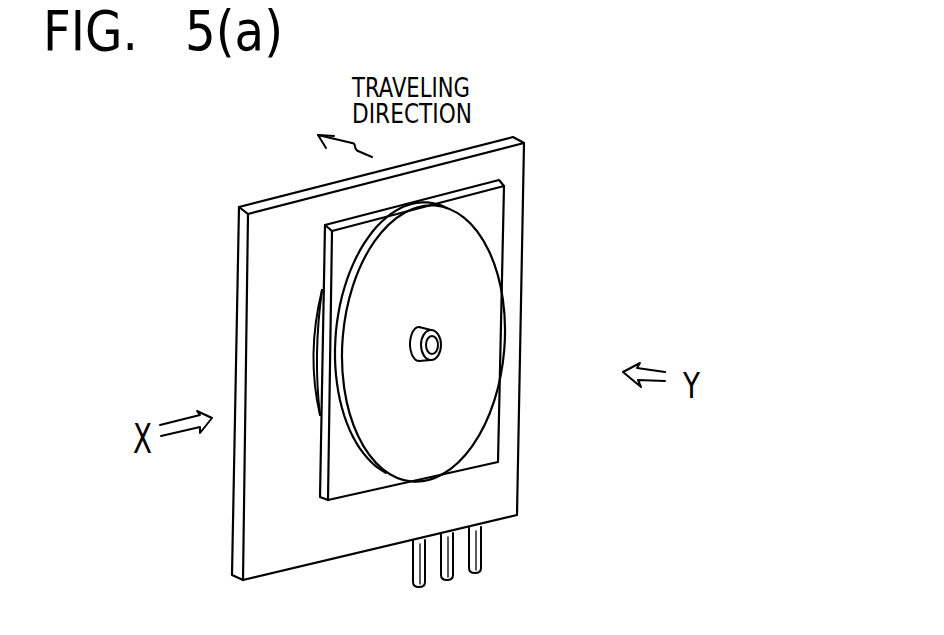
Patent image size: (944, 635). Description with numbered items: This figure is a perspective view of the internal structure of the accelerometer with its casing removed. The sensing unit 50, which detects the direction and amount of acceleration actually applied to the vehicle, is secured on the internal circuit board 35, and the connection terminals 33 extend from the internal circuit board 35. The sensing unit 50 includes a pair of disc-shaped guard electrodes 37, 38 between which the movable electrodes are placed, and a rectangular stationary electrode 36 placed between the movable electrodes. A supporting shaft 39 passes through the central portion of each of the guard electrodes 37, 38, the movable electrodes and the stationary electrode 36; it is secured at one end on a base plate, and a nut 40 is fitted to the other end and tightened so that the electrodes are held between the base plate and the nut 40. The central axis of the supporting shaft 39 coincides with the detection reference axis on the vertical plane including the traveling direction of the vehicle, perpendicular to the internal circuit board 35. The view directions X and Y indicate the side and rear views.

The connection terminals 33 is at (492, 577).
The internal circuit board 35 is at (524, 137).
The stationary electrode 36 is at (505, 197).
The guard electrode 37 is at (313, 329).
The guard electrode 38 is at (486, 261).
The supporting shaft 39 is at (441, 337).
The nut 40 is at (436, 359).
The sensing unit 50 is at (505, 463).